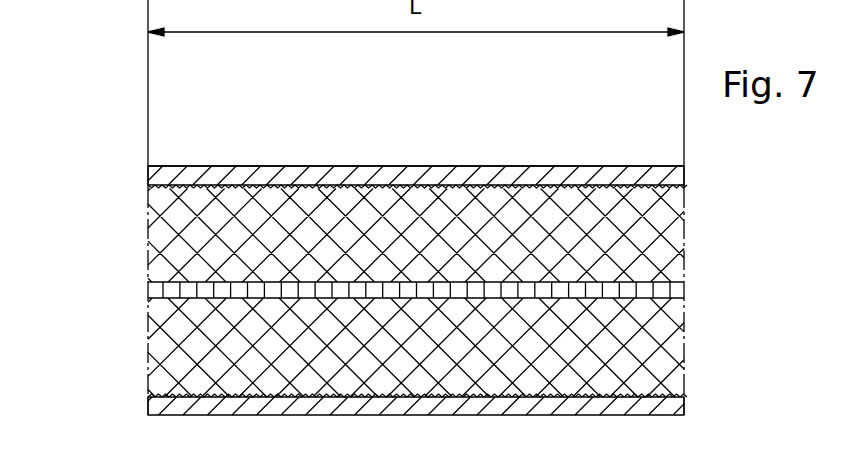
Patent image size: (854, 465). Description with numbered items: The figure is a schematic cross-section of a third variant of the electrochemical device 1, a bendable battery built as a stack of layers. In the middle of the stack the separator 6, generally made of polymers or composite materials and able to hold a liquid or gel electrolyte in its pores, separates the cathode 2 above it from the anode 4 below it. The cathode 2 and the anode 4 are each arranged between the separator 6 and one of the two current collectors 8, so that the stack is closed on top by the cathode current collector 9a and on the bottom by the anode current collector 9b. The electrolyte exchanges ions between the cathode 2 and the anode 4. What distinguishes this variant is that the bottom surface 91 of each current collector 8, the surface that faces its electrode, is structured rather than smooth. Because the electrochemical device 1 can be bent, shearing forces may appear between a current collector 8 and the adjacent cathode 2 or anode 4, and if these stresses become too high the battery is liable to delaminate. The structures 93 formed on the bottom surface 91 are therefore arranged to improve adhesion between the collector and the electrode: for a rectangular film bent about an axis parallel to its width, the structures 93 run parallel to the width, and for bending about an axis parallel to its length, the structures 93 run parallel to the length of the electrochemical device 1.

The electrochemical device 1 is at (97, 90).
The current collector 8 is at (313, 164).
The cathode current collector 9a is at (167, 175).
The anode current collector 9b is at (162, 401).
The cathode 2 is at (168, 239).
The anode 4 is at (168, 367).
The separator 6 is at (162, 293).
The bottom surface 91 is at (638, 188).
The structures 93 is at (625, 195).